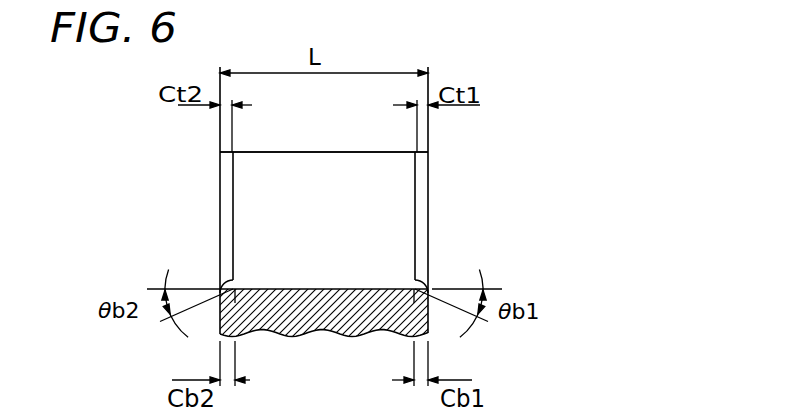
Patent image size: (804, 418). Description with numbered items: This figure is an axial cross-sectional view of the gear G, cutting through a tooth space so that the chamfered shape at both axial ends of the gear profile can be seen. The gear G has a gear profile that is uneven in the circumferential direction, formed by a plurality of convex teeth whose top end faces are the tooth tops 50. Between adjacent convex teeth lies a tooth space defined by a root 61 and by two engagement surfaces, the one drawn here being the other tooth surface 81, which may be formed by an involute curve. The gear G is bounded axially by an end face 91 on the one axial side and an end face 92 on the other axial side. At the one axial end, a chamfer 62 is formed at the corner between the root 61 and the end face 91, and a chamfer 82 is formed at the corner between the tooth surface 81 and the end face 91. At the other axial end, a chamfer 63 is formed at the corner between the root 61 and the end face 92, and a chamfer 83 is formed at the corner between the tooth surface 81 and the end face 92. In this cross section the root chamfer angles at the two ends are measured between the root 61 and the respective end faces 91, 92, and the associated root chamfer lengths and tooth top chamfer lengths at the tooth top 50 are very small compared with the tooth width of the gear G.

The gear G is at (485, 132).
The tooth top 50 is at (273, 150).
The root 61 is at (278, 289).
The chamfer 62 is at (419, 290).
The chamfer 63 is at (225, 285).
The tooth surface 81 is at (362, 242).
The chamfer 82 is at (415, 198).
The chamfer 83 is at (233, 207).
The end face 91 is at (428, 173).
The end face 92 is at (220, 168).